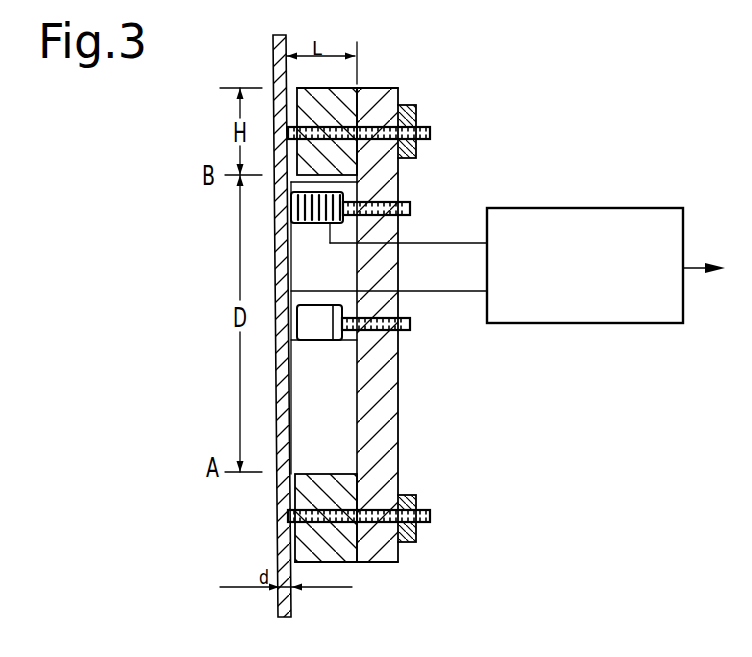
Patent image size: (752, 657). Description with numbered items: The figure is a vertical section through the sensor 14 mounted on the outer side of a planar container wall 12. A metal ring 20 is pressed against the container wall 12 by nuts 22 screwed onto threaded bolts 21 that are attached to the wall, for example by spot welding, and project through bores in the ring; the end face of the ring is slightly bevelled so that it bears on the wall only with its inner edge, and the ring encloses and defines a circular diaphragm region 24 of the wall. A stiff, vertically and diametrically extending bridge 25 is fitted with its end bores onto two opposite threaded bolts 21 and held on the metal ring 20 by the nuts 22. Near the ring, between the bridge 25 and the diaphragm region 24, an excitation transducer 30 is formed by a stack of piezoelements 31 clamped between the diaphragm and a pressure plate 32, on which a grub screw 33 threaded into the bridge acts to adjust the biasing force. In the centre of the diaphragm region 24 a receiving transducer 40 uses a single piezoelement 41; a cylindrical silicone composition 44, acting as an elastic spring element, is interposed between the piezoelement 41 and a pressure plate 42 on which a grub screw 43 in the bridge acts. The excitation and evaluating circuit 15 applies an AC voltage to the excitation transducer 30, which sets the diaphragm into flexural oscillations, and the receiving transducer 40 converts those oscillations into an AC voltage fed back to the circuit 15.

The container wall 12 is at (273, 62).
The sensor 14 is at (387, 78).
The excitation and evaluating circuit 15 is at (578, 208).
The metal ring 20 is at (345, 560).
The threaded bolts 21 is at (431, 133).
The nuts 22 is at (416, 108).
The diaphragm region 24 is at (292, 452).
The bridge 25 is at (393, 355).
The excitation transducer 30 is at (354, 232).
The stack of piezoelements 31 is at (303, 226).
The pressure plate 32 is at (343, 190).
The grub screw 33 is at (411, 208).
The receiving transducer 40 is at (353, 353).
The piezoelement 41 is at (294, 348).
The pressure plate 42 is at (400, 314).
The grub screw 43 is at (411, 329).
The silicone composition 44 is at (323, 342).